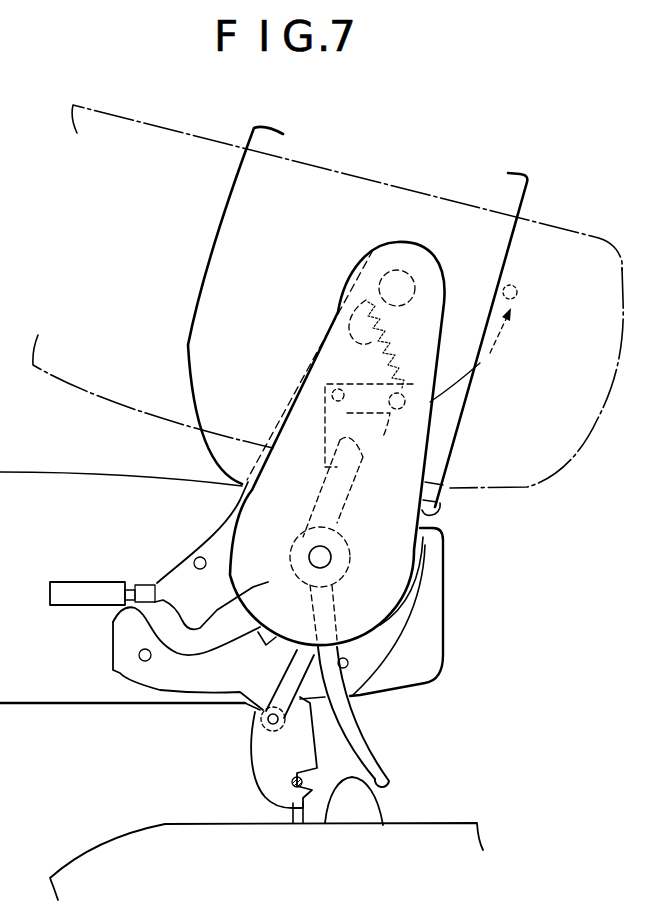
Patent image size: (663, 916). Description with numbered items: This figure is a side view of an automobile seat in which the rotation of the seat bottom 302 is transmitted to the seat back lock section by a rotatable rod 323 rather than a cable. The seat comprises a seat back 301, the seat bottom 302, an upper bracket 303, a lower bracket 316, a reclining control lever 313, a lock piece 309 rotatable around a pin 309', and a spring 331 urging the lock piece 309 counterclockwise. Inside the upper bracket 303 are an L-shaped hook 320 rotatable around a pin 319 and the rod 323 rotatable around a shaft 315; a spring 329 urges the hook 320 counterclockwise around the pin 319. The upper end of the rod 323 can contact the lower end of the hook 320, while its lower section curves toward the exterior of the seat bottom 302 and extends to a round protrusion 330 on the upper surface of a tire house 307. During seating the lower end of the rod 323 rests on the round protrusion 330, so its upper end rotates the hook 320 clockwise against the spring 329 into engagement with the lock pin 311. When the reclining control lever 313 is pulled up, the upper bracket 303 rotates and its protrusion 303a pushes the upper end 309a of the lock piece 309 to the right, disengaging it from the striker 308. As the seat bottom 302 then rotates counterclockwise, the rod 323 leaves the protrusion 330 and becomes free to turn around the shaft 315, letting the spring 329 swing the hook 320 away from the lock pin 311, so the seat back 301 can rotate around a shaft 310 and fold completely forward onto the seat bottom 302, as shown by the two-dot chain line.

The seat back 301 is at (578, 228).
The seat bottom 302 is at (98, 472).
The upper bracket 303 is at (438, 512).
The protrusion 303a is at (267, 632).
The tire house 307 is at (95, 850).
The striker 308 is at (293, 813).
The lock piece 309 is at (253, 752).
The pin 309' is at (215, 736).
The upper end of the lock piece 309a is at (300, 612).
The shaft 310 is at (414, 283).
The lock pin 311 is at (387, 420).
The reclining control lever 313 is at (78, 582).
The shaft 315 is at (327, 555).
The lower bracket 316 is at (175, 560).
The pin 319 is at (327, 395).
The L-shaped hook 320 is at (350, 378).
The rod 323 is at (373, 768).
The spring 329 is at (340, 320).
The round protrusion 330 is at (383, 808).
The spring 331 is at (250, 717).